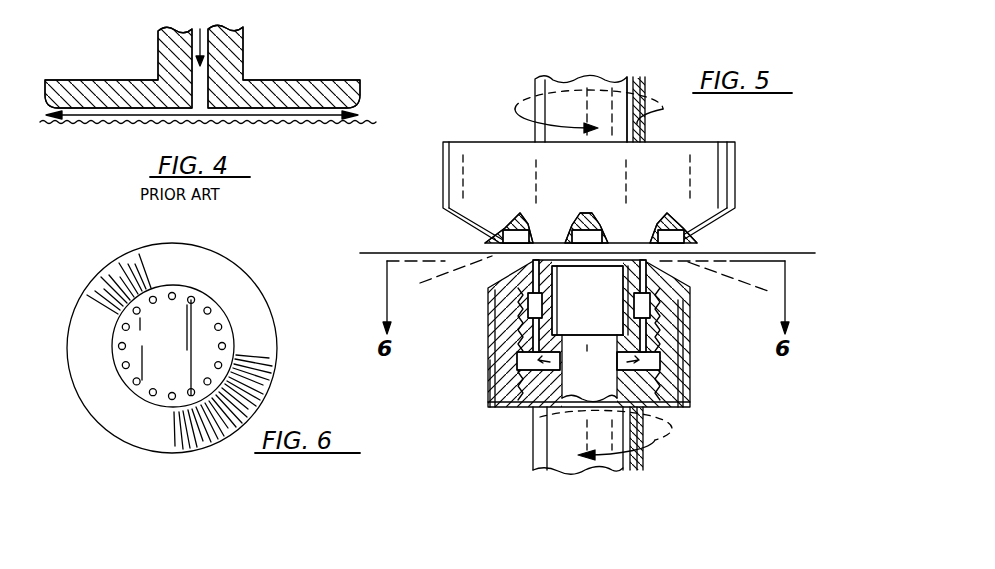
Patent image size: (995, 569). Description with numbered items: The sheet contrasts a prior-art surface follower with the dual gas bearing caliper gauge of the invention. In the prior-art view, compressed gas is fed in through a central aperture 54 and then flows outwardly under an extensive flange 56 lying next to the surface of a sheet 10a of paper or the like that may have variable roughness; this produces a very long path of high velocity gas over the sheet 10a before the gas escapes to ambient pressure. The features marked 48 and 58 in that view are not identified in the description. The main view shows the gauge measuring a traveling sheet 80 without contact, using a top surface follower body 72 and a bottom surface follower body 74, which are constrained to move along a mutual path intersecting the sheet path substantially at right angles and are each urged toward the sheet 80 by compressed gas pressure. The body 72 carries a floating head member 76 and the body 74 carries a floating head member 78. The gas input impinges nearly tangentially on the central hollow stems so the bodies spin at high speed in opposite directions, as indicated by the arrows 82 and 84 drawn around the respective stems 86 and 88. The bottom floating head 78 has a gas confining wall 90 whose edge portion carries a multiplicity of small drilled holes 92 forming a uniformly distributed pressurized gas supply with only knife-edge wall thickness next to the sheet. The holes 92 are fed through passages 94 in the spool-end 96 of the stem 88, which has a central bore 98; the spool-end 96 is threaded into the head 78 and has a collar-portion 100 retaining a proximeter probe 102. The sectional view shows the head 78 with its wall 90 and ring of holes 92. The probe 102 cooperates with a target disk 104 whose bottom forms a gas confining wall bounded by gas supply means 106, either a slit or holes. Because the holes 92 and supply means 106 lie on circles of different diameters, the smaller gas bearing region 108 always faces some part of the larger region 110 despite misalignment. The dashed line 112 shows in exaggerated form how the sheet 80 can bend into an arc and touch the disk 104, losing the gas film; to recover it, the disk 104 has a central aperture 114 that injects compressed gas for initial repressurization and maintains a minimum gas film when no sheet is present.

In FIG. 4, the sheet 10a is at (365, 121).
In FIG. 4, the weld flow direction 48 is at (305, 116).
In FIG. 4, the central aperture 54 is at (205, 66).
In FIG. 4, the extensive flange 56 is at (116, 90).
In FIG. 4, the edge flow 58 is at (368, 95).
In FIG. 5, the top surface follower body 72 is at (430, 211).
In FIG. 5, the bottom surface follower body 74 is at (554, 333).
In FIG. 5, the floating head member 76 is at (449, 170).
In FIG. 6, the floating head member 78 is at (104, 272).
In FIG. 5, the floating head member 78 is at (492, 392).
In FIG. 5, the sheet 80 is at (790, 253).
In FIG. 5, the arrow 82 is at (519, 108).
In FIG. 5, the arrow 84 is at (655, 440).
In FIG. 5, the stem 86 is at (636, 123).
In FIG. 5, the stem 88 is at (533, 415).
In FIG. 6, the gas confining wall 90 is at (200, 323).
In FIG. 5, the gas confining wall 90 is at (632, 243).
In FIG. 6, the small drilled holes 92 is at (126, 345).
In FIG. 5, the small drilled holes 92 is at (535, 262).
In FIG. 5, the passages 94 is at (490, 320).
In FIG. 5, the spool-end 96 is at (500, 372).
In FIG. 5, the central bore 98 is at (602, 380).
In FIG. 5, the collar-portion 100 is at (555, 335).
In FIG. 5, the proximeter probe 102 is at (605, 287).
In FIG. 5, the target disk 104 is at (583, 243).
In FIG. 5, the gas supply means 106 is at (497, 243).
In FIG. 5, the smaller gas bearing region 108 is at (620, 262).
In FIG. 5, the larger gas bearing region 110 is at (556, 243).
In FIG. 5, the dashed line 112 is at (748, 280).
In FIG. 5, the central aperture 114 is at (598, 243).